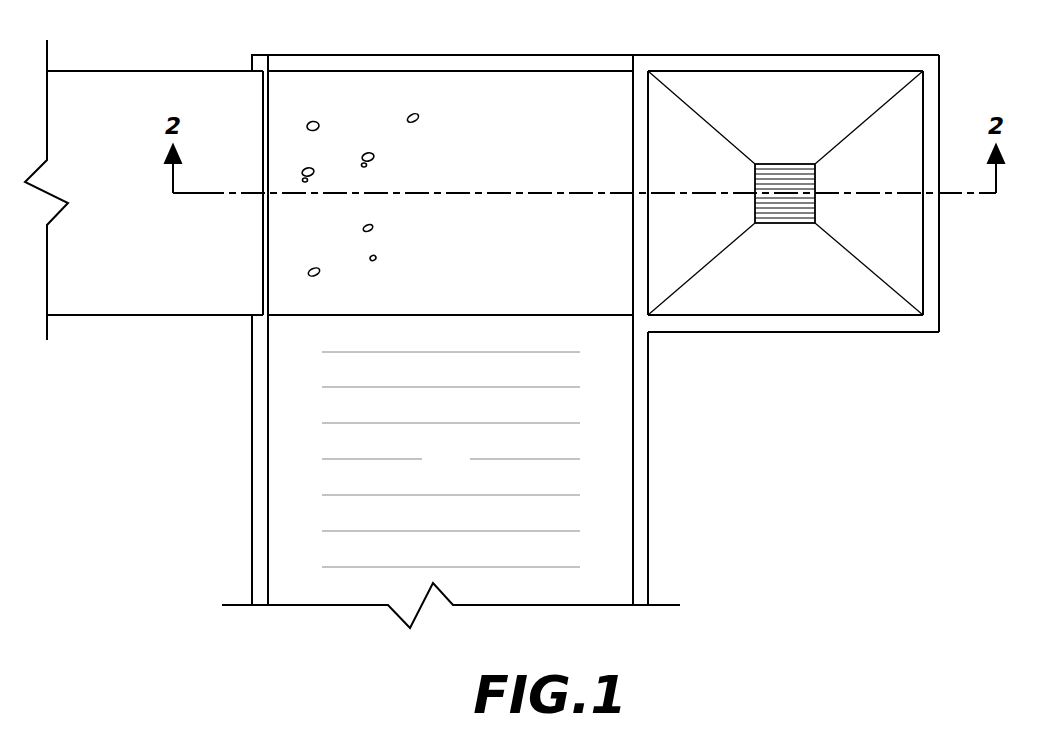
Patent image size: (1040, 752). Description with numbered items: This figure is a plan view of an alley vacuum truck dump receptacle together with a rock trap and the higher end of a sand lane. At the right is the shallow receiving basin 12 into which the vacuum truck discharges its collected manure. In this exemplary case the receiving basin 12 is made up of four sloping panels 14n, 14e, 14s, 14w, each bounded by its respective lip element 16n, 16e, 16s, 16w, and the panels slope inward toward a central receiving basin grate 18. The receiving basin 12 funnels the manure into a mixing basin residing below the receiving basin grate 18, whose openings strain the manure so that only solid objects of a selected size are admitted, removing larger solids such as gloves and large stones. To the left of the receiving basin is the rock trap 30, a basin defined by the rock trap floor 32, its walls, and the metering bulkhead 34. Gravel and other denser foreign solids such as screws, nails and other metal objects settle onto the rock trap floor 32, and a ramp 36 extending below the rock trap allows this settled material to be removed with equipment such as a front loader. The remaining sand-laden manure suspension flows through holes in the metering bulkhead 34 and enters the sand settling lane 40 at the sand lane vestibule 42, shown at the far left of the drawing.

The receiving basin 12 is at (829, 80).
The sloping panel 14n is at (772, 146).
The sloping panel 14e is at (864, 176).
The sloping panel 14s is at (769, 287).
The sloping panel 14w is at (670, 241).
The lip element 16n is at (757, 62).
The lip element 16e is at (932, 240).
The lip element 16s is at (795, 322).
The lip element 16w is at (633, 133).
The receiving basin grate 18 is at (805, 205).
The rock trap 30 is at (414, 78).
The rock trap floor 32 is at (438, 271).
The metering bulkhead 34 is at (268, 70).
The ramp 36 is at (433, 477).
The sand settling lane 40 is at (125, 80).
The sand lane vestibule 42 is at (124, 253).